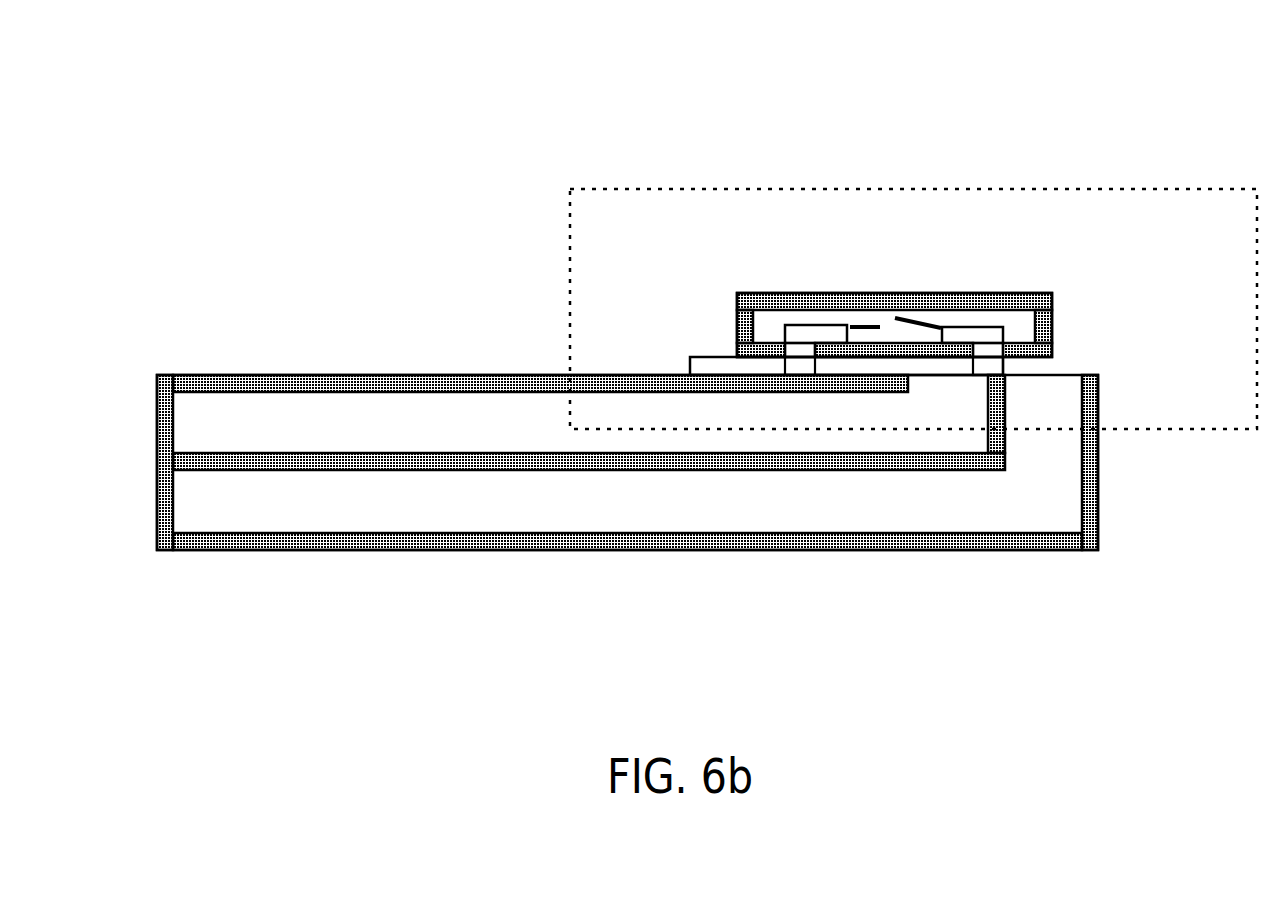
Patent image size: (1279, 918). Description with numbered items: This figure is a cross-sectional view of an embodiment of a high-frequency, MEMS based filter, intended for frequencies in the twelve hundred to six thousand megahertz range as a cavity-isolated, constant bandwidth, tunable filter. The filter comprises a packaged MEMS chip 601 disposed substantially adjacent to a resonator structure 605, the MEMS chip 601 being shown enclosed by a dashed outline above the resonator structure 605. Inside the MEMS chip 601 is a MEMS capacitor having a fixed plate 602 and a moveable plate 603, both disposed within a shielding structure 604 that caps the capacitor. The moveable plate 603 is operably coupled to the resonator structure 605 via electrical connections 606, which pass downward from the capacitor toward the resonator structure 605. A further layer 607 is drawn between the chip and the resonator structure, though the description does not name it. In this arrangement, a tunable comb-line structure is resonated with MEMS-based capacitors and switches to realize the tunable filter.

The packaged MEMS chip 601 is at (913, 189).
The fixed plate 602 is at (878, 327).
The moveable plate 603 is at (895, 318).
The shielding structure 604 is at (982, 300).
The resonator structure 605 is at (777, 462).
The electrical connections 606 is at (1000, 332).
The membrane layer 607 is at (703, 368).